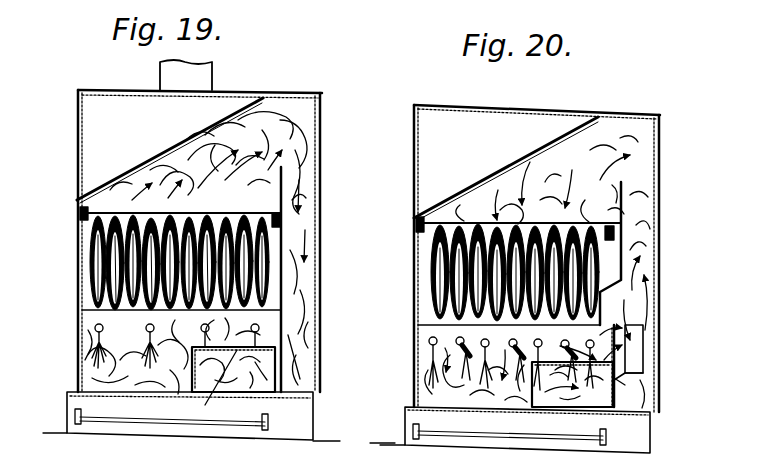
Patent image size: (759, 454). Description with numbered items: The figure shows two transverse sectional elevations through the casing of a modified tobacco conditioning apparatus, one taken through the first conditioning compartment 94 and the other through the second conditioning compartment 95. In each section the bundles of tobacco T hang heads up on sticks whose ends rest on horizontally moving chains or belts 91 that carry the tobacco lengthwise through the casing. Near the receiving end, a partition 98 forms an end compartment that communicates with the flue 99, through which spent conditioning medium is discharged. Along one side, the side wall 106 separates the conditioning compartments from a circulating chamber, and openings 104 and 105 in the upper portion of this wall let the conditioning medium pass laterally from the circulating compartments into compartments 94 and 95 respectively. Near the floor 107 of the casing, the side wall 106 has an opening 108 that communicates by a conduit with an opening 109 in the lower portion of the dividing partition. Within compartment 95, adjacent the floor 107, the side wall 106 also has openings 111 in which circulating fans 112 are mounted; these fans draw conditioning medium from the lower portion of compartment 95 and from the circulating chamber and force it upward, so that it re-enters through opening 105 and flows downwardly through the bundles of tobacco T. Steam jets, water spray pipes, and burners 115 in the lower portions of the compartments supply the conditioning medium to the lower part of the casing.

In FIG. 19, the flue 99 is at (213, 77).
In FIG. 19, the conditioning compartment 94 is at (208, 163).
In FIG. 19, the opening 104 is at (335, 151).
In FIG. 19, the chains or belts 91 is at (82, 212).
In FIG. 20, the chains or belts 91 is at (414, 226).
In FIG. 19, the bundles of tobacco T is at (107, 258).
In FIG. 20, the bundles of tobacco T is at (438, 287).
In FIG. 19, the side wall 106 is at (283, 264).
In FIG. 20, the side wall 106 is at (622, 213).
In FIG. 19, the partition 98 is at (88, 312).
In FIG. 19, the burners 115 is at (147, 332).
In FIG. 20, the burners 115 is at (430, 343).
In FIG. 19, the floor 107 is at (134, 394).
In FIG. 20, the floor 107 is at (476, 411).
In FIG. 19, the opening 108 is at (258, 390).
In FIG. 20, the conditioning compartment 95 is at (552, 180).
In FIG. 20, the opening 105 is at (627, 168).
In FIG. 20, the circulating fans 112 is at (643, 360).
In FIG. 20, the openings 111 is at (623, 374).
In FIG. 20, the opening 109 is at (514, 418).